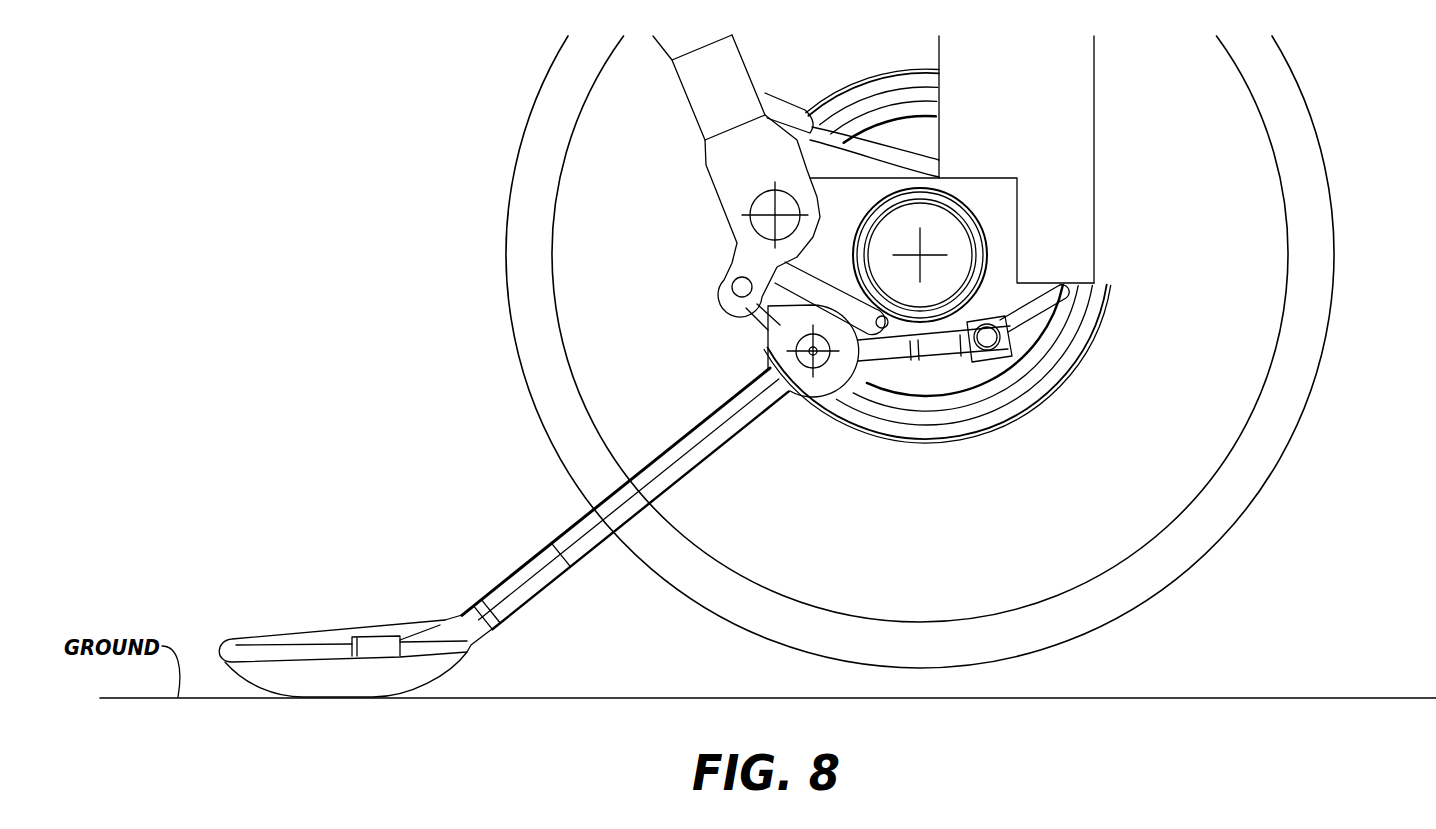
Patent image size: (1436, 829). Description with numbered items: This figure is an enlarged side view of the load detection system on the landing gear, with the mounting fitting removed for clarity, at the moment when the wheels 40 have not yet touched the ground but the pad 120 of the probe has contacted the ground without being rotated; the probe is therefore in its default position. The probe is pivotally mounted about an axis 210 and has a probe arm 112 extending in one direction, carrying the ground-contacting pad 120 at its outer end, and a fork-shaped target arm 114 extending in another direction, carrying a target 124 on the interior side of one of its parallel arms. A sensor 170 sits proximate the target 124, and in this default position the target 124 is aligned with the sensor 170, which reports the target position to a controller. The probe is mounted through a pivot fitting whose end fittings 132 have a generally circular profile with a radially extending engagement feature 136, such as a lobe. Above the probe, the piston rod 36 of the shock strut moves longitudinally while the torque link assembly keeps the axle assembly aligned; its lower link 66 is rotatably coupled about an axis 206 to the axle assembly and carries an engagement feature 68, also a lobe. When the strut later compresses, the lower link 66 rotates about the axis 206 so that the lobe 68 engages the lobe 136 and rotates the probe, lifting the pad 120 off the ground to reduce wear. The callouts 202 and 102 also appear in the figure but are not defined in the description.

The piston rod 36 is at (1094, 112).
The wheels 40 is at (1322, 152).
The wheel axle hub 202 is at (920, 255).
The sensor 170 is at (1010, 335).
The target 124 is at (978, 352).
The target arm 114 is at (925, 352).
The kickstand assembly 102 is at (803, 427).
The end fitting 132 is at (803, 385).
The probe arm 112 is at (530, 598).
The pad 120 is at (417, 670).
The axis 210 is at (773, 343).
The engagement feature 136 is at (795, 349).
The engagement feature 68 is at (727, 264).
The axis 206 is at (762, 207).
The lower link 66 is at (689, 102).